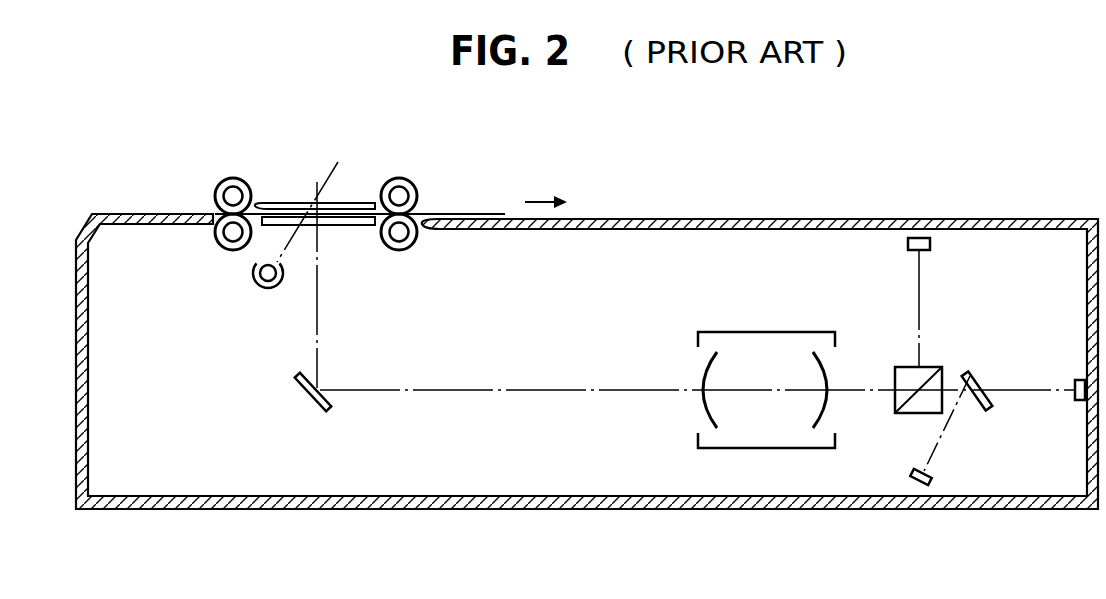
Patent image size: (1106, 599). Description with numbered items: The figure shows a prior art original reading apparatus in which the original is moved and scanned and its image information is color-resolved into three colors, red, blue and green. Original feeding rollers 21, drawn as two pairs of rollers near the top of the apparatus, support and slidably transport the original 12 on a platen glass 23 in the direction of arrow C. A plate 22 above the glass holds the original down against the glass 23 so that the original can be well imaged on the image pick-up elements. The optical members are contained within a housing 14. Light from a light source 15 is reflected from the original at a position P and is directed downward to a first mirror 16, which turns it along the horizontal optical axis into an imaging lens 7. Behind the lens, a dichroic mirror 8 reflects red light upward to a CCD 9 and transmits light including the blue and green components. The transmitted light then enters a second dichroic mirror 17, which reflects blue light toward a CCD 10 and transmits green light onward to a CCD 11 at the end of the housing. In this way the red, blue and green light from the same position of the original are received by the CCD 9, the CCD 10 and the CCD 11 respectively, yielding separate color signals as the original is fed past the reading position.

The imaging lens 7 is at (778, 420).
The dichroic mirror 8 is at (910, 415).
The CCD 9 is at (916, 238).
The CCD 10 is at (918, 488).
The CCD 11 is at (1075, 405).
The original 12 is at (472, 212).
The housing 14 is at (542, 509).
The light source 15 is at (255, 285).
The first mirror 16 is at (308, 398).
The dichroic mirror 17 is at (970, 367).
The original feeding rollers 21 is at (223, 182).
The plate 22 is at (298, 202).
The platen glass 23 is at (342, 225).
The position P is at (317, 259).
The arrow C is at (560, 201).